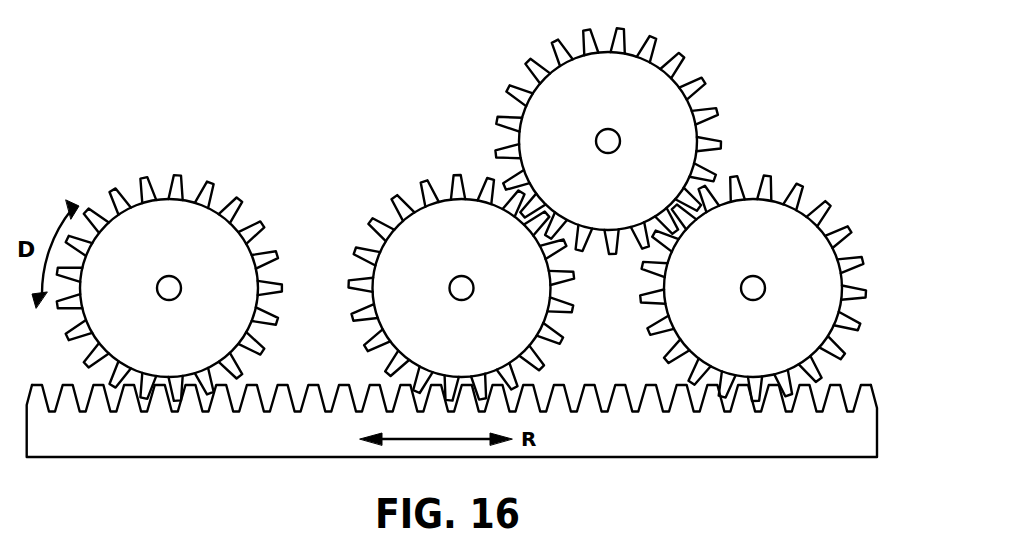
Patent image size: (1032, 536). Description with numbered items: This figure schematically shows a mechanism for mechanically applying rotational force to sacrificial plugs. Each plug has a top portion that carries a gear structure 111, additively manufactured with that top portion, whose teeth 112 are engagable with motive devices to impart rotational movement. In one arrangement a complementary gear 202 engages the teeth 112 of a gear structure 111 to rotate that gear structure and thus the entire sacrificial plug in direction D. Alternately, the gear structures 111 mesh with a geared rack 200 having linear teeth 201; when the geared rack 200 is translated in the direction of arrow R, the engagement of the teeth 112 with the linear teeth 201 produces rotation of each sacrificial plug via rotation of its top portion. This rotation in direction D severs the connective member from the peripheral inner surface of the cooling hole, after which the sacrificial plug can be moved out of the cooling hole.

The gear structure 111 is at (181, 254).
The teeth 112 is at (150, 180).
The geared rack 200 is at (481, 393).
The linear teeth 201 is at (817, 385).
The complementary gear 202 is at (635, 110).